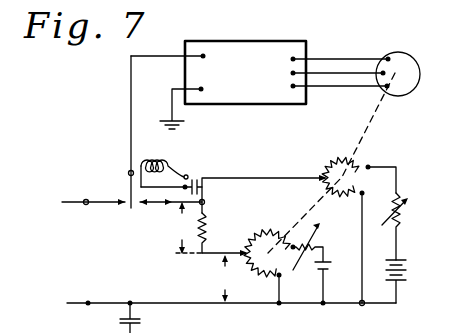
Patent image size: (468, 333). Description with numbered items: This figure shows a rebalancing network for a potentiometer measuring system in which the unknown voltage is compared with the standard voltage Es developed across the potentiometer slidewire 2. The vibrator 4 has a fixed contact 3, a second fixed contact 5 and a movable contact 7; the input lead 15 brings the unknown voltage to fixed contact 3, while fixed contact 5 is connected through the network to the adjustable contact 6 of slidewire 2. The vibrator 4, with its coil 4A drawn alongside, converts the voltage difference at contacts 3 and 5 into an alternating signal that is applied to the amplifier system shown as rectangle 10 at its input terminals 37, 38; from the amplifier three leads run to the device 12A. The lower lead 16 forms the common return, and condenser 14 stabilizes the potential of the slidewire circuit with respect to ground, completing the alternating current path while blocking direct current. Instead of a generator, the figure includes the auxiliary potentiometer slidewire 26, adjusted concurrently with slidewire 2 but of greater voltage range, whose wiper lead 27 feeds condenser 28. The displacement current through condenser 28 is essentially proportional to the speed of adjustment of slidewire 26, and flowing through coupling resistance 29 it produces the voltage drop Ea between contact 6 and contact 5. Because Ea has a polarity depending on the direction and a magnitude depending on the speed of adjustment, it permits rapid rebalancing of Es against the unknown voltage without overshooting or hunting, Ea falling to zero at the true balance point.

The amplifier system 10 is at (268, 42).
The input terminal 37 is at (205, 56).
The ground terminal 38 is at (204, 89).
The indicating meter 12A is at (418, 60).
The vibrator 4 is at (111, 171).
The coil 4A is at (168, 162).
The movable contact 7 is at (131, 190).
The input lead 15 is at (64, 200).
The fixed contact 3 is at (110, 206).
The fixed contact 5 is at (150, 206).
The condenser 28 is at (200, 190).
The coupling resistance 29 is at (205, 228).
The wiper lead 27 is at (282, 177).
The auxiliary potentiometer slidewire 26 is at (348, 153).
The potentiometer slidewire 2 is at (266, 240).
The adjustable contact 6 is at (240, 252).
The ground lead 16 is at (70, 302).
The condenser 14 is at (136, 319).
The voltage drop Ea is at (187, 228).
The standard voltage Es is at (227, 278).